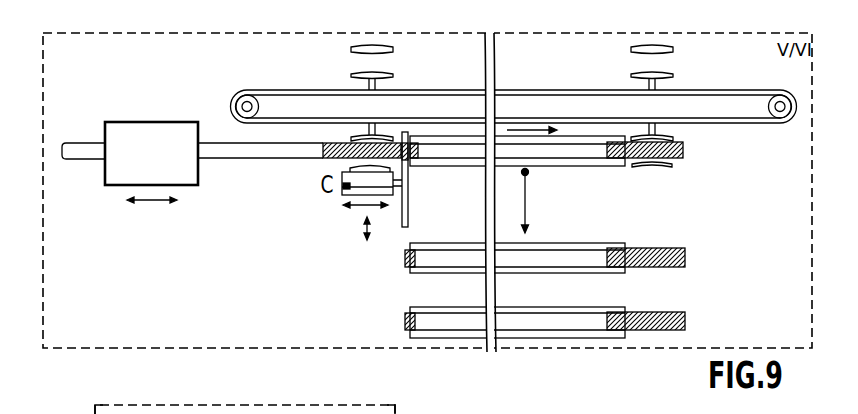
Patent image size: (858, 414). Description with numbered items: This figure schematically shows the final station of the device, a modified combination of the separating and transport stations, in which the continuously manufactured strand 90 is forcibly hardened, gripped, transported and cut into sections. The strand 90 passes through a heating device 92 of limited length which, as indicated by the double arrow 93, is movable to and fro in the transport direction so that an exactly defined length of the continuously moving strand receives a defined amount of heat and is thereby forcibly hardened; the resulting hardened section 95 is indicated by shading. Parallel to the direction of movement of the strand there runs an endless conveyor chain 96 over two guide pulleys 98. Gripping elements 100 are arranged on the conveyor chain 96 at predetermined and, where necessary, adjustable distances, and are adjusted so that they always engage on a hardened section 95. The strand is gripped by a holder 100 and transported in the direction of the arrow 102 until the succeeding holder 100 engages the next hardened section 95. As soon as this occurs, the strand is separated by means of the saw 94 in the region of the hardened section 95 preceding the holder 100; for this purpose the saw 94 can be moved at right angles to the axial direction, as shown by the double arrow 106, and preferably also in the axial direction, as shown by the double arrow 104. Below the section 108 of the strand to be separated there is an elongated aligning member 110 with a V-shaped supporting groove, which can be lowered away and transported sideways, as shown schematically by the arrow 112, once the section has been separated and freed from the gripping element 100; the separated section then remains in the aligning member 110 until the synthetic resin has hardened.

The strand 90 is at (90, 143).
The heating device 92 is at (148, 135).
The double arrow 93 is at (152, 203).
The saw 94 is at (342, 192).
The hardened section 95 is at (686, 313).
The endless conveyor chain 96 is at (452, 88).
The guide pulleys 98 is at (784, 92).
The gripping elements 100 is at (657, 167).
The arrow 102 is at (523, 125).
The double arrow 104 is at (357, 209).
The double arrow 106 is at (368, 230).
The section of the strand 108 is at (455, 148).
The aligning member 110 is at (616, 306).
The arrow 112 is at (528, 199).